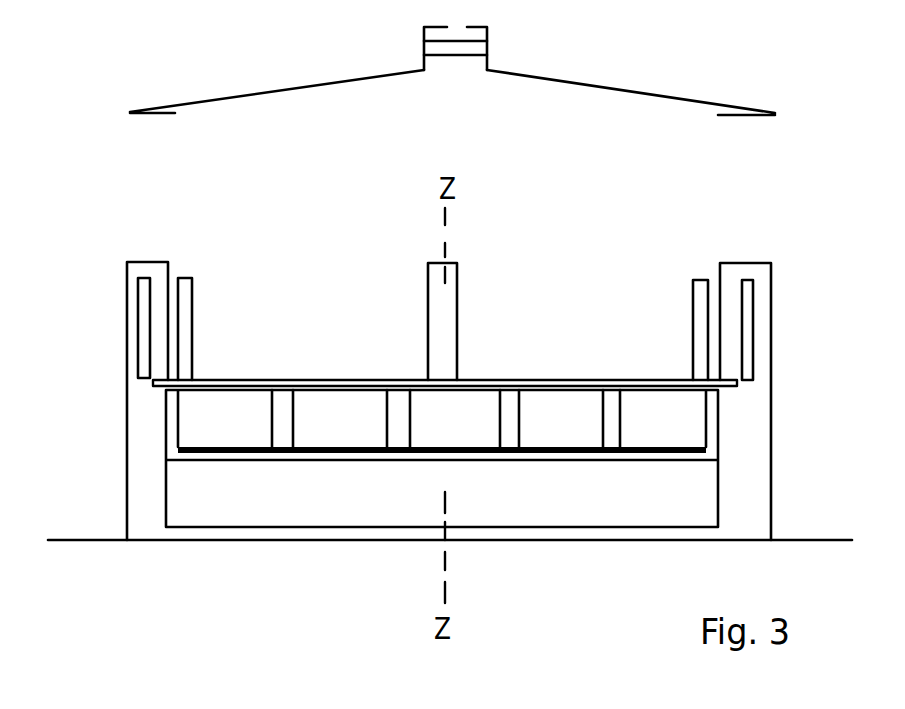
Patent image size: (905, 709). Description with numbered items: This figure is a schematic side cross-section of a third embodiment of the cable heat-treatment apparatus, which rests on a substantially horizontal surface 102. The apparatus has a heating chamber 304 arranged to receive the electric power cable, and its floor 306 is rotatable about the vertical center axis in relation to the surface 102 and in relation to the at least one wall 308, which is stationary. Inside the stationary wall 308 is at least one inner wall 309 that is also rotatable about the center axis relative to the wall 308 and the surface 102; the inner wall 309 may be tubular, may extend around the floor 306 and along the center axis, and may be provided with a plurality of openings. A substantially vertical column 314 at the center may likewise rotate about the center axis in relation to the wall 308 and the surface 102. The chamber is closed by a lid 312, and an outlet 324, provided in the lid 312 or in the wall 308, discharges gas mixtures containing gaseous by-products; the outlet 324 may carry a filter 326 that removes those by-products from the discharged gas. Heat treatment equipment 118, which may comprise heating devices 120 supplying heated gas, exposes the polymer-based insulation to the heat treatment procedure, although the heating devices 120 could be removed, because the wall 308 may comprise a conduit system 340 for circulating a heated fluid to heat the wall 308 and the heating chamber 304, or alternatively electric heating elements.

The substantially horizontal surface 102 is at (62, 540).
The heat treatment equipment 118 is at (176, 420).
The heating devices 120 is at (440, 433).
The heating chamber 304 is at (292, 287).
The floor 306 is at (297, 380).
The wall 308 is at (170, 280).
The inner wall 309 is at (192, 324).
The lid 312 is at (627, 90).
The substantially vertical column 314 is at (458, 313).
The outlet 324 is at (480, 29).
The filter 326 is at (424, 49).
The conduit system 340 is at (140, 315).